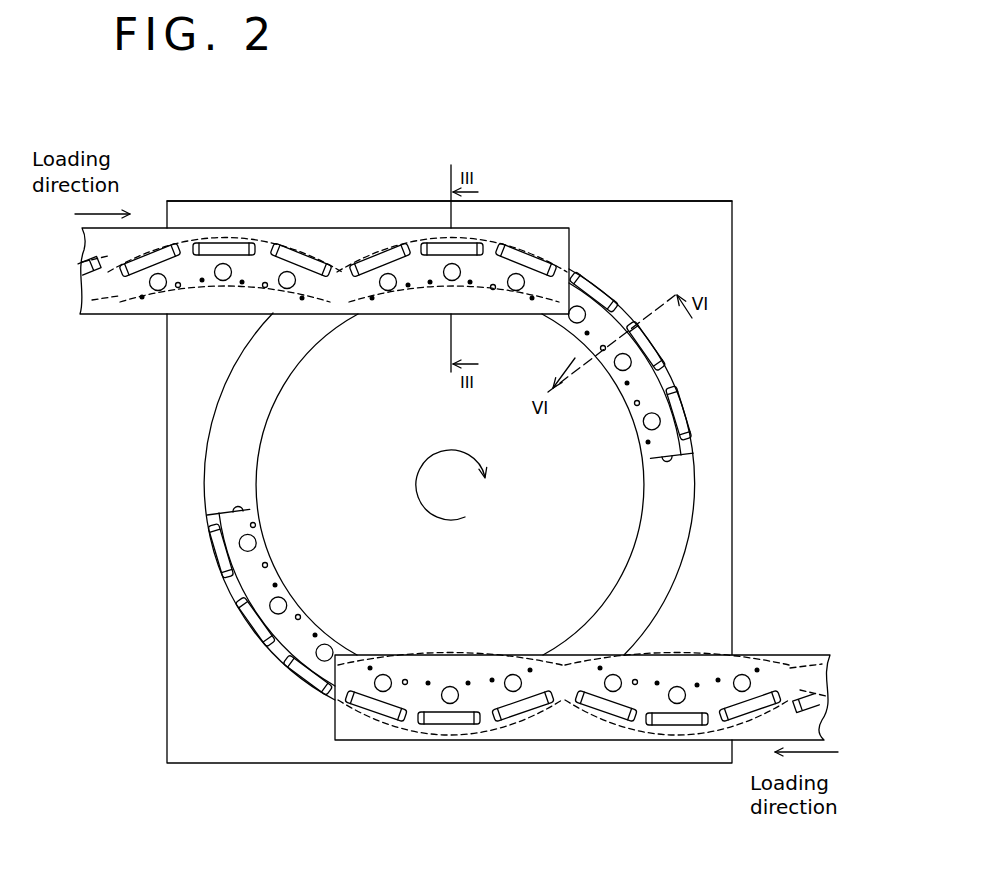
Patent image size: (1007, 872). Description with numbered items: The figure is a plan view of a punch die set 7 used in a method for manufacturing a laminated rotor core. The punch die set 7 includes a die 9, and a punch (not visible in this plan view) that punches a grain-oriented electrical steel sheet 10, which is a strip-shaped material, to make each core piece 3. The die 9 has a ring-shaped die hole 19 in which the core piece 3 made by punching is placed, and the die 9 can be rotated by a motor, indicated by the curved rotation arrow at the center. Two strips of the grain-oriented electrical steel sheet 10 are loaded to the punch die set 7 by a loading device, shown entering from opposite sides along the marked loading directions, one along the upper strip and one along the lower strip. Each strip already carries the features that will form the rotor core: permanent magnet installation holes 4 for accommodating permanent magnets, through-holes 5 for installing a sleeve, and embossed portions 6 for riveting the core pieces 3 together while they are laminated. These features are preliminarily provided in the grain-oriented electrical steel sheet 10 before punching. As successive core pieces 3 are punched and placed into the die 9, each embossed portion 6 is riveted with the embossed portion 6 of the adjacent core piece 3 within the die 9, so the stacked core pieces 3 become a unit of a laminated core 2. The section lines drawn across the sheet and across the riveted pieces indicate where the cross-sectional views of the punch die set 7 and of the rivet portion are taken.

The laminated core 2 is at (594, 270).
The core piece 3 is at (612, 300).
The permanent magnet installation hole 4 is at (163, 255).
The through-hole 5 is at (158, 291).
The embossed portion 6 is at (142, 299).
The punch die set 7 is at (634, 195).
The die 9 is at (700, 215).
The grain-oriented electrical steel sheet 10 is at (300, 228).
The die hole 19 is at (665, 500).